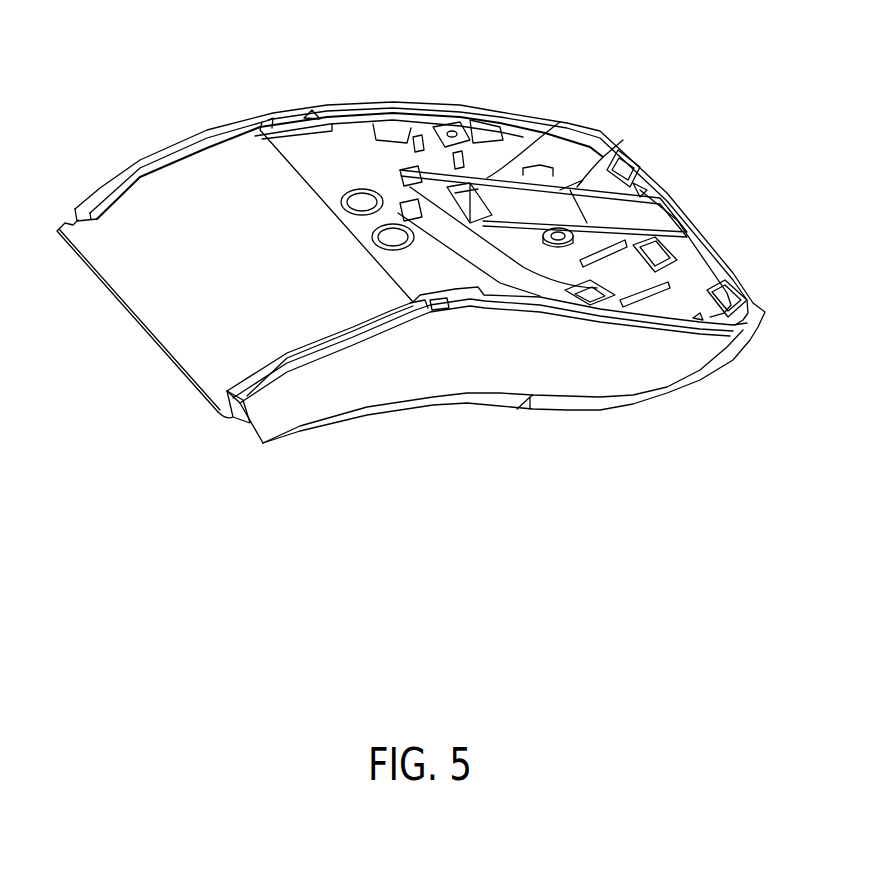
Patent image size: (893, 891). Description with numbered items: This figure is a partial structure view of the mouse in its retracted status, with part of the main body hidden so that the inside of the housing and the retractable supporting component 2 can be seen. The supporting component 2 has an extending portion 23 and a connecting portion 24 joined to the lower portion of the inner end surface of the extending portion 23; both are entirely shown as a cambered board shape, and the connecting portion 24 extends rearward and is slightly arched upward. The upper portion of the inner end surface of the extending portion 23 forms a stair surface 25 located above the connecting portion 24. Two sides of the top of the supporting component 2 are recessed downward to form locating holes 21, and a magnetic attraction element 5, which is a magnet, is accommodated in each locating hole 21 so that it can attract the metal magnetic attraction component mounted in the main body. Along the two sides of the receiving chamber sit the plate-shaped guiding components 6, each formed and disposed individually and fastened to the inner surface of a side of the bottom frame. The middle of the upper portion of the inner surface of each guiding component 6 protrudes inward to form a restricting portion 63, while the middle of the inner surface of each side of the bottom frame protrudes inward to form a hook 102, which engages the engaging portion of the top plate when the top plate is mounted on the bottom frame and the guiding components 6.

The retractable supporting component 2 is at (187, 328).
The magnetic attraction element 5 is at (393, 237).
The guiding component 6 is at (113, 180).
The locating hole 21 is at (268, 126).
The extending portion 23 is at (210, 413).
The connecting portion 24 is at (357, 163).
The stair surface 25 is at (337, 192).
The restricting portion 63 is at (303, 123).
The hook 102 is at (273, 118).